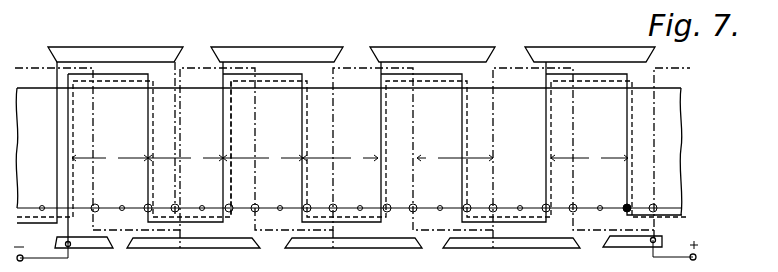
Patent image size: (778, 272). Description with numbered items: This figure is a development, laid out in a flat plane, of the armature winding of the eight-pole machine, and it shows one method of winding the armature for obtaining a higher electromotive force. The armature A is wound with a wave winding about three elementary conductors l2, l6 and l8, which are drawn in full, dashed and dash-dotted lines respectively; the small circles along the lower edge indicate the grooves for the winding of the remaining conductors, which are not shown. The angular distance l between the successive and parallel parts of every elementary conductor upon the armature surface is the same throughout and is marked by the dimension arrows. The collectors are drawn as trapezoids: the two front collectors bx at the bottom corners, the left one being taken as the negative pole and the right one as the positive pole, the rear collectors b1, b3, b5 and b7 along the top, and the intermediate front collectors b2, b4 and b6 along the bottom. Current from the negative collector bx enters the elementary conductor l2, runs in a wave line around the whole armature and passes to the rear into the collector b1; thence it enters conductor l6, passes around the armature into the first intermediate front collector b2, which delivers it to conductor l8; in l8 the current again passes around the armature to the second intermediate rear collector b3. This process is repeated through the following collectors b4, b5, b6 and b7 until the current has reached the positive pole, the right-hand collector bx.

The plate / armature body A is at (673, 186).
The rear collector b1 is at (96, 57).
The first intermediate front collector b2 is at (187, 247).
The second intermediate rear collector b3 is at (256, 58).
The brush contact b4 is at (332, 251).
The brush contact b5 is at (410, 56).
The brush contact b6 is at (492, 251).
The brush contact b7 is at (553, 55).
The front box collector bx is at (618, 250).
The pitch length l is at (350, 158).
The elementary conductor l2 is at (61, 140).
The elementary conductor l6 is at (183, 104).
The elementary conductor l8 is at (238, 103).